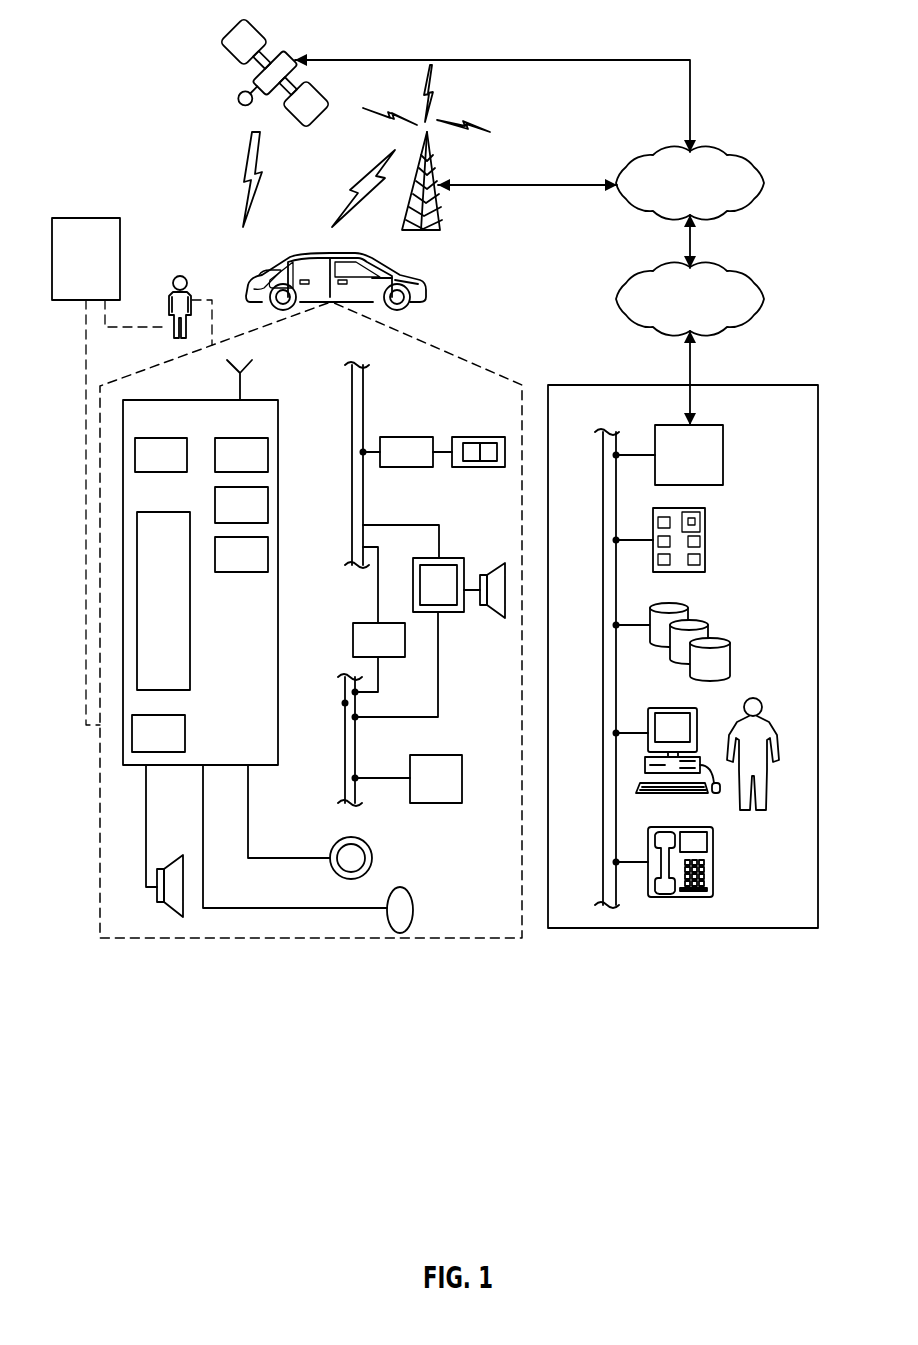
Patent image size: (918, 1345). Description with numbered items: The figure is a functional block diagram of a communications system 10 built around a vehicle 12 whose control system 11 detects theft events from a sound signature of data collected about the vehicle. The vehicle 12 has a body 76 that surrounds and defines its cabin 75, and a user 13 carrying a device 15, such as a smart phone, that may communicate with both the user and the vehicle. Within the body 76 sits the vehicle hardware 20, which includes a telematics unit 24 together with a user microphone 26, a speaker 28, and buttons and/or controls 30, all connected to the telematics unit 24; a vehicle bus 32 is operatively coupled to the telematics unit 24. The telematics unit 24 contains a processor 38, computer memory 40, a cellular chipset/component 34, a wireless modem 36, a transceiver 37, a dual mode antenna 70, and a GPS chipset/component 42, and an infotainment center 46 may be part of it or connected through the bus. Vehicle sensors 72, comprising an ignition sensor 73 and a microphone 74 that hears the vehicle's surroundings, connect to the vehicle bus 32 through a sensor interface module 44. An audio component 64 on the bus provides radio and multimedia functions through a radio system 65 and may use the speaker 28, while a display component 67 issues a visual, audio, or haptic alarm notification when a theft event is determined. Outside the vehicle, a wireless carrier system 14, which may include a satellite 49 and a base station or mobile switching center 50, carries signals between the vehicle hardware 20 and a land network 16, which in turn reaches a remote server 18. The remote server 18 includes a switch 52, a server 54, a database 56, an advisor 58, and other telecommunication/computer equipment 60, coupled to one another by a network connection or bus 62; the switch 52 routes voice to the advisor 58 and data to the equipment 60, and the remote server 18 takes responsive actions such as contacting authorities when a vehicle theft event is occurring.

The communications system 10 is at (150, 32).
The control system 11 is at (242, 578).
The vehicle 12 is at (310, 253).
The user 13 is at (180, 276).
The wireless carrier system 14 is at (733, 124).
The device 15 is at (86, 218).
The land network 16 is at (736, 274).
The remote server 18 is at (772, 385).
The vehicle hardware 20 is at (448, 345).
The telematics unit 24 is at (278, 652).
The user microphone 26 is at (401, 887).
The speaker 28 is at (173, 913).
The buttons and/or controls 30 is at (352, 837).
The vehicle bus 32 is at (365, 505).
The cellular chipset/component 34 is at (178, 438).
The wireless modem 36 is at (255, 438).
The transceiver 37 is at (268, 505).
The processor 38 is at (178, 512).
The computer memory 40 is at (185, 728).
The GPS chipset/component 42 is at (268, 556).
The sensor interface module 44 is at (407, 437).
The infotainment center 46 is at (362, 623).
The satellite 49 is at (281, 58).
The base station and/or mobile switching center 50 is at (748, 164).
The switch 52 is at (704, 424).
The server 54 is at (705, 540).
The database 56 is at (722, 640).
The advisor 58 is at (766, 722).
The telecommunication/computer equipment 60 is at (714, 864).
The network connection or bus 62 is at (602, 670).
The audio component 64 is at (450, 613).
The radio system 65 is at (452, 599).
The display component 67 is at (448, 790).
The dual mode antenna 70 is at (243, 388).
The vehicle sensors 72 is at (481, 437).
The ignition sensor 73 is at (470, 462).
The microphone 74 is at (488, 462).
The cabin 75 is at (357, 268).
The body 76 is at (393, 270).